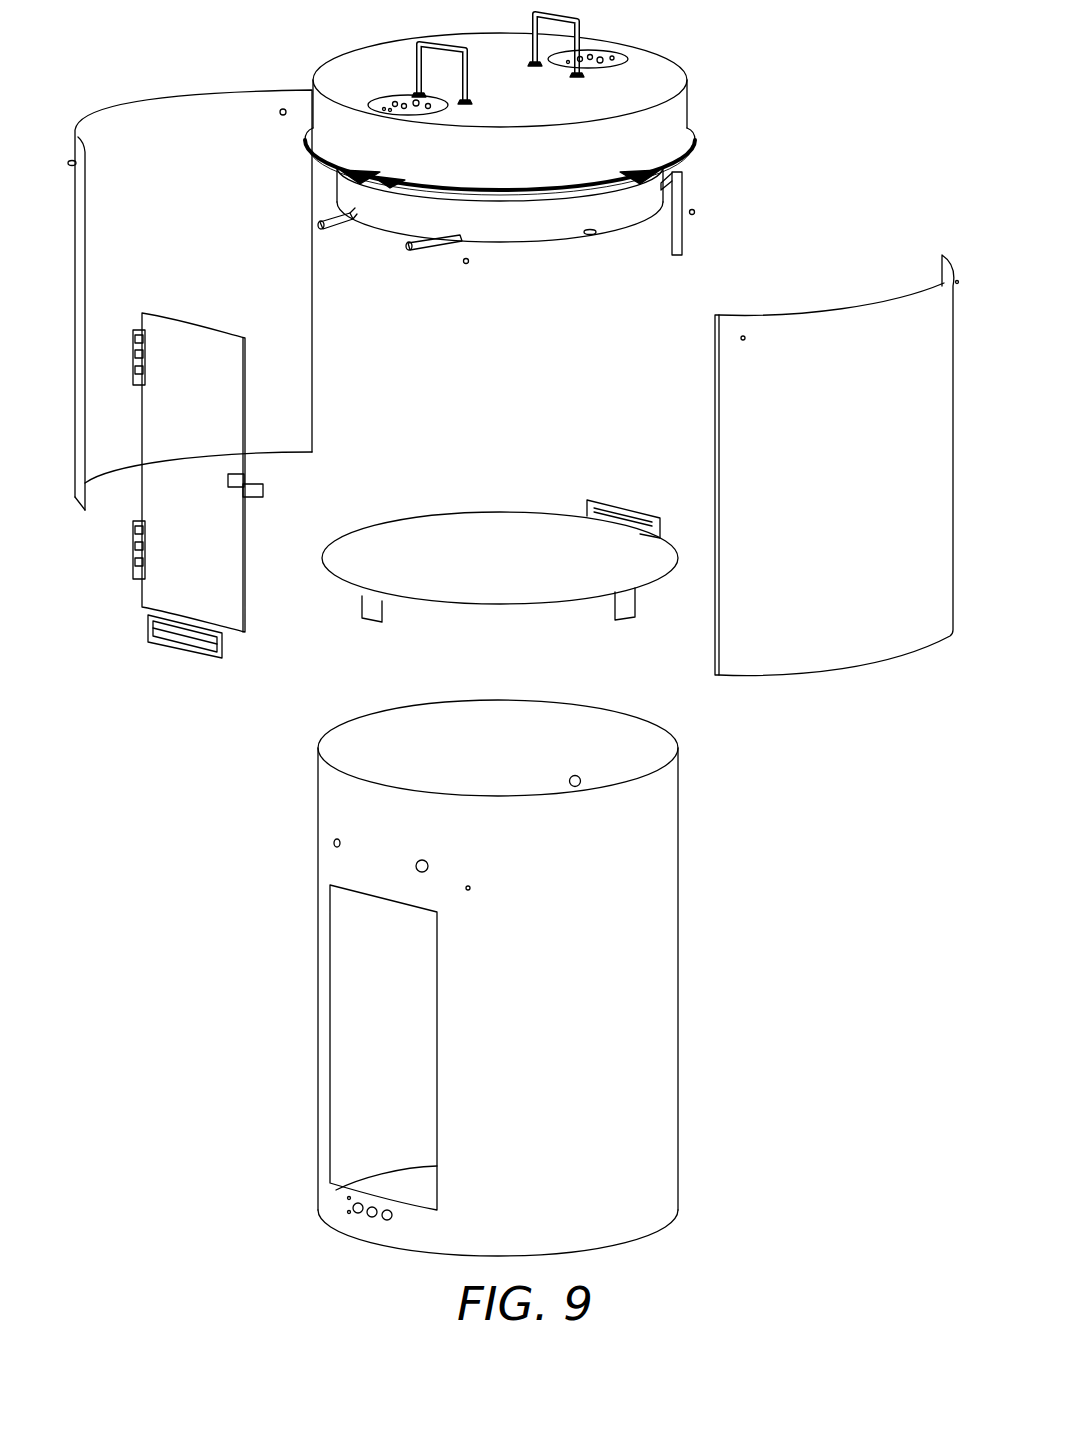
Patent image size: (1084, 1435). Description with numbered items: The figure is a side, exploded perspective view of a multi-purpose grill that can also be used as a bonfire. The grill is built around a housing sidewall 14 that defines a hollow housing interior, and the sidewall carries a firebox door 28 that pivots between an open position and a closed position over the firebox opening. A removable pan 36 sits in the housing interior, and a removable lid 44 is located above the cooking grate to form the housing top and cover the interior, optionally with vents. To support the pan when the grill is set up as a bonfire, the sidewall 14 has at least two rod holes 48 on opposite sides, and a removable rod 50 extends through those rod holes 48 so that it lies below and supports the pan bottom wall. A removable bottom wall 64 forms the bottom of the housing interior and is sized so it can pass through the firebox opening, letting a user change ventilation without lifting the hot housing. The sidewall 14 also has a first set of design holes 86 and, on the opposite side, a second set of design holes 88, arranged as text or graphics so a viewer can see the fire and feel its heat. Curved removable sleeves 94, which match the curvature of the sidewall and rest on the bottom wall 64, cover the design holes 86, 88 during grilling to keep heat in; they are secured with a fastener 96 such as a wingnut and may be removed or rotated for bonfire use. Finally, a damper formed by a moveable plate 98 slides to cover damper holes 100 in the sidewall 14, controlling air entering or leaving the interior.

The housing sidewall 14 is at (340, 818).
The firebox door 28 is at (155, 503).
The pan 36 is at (548, 229).
The removable lid 44 is at (667, 82).
The rod holes 48 is at (576, 776).
The removable rod 50 is at (684, 198).
The bottom wall 64 is at (473, 528).
The first set of design holes 86 is at (588, 983).
The second set of design holes 88 is at (397, 1008).
The removable sleeve 94 is at (287, 323).
The fastener 96 is at (692, 214).
The moveable plate 98 is at (173, 634).
The damper holes 100 is at (365, 1213).